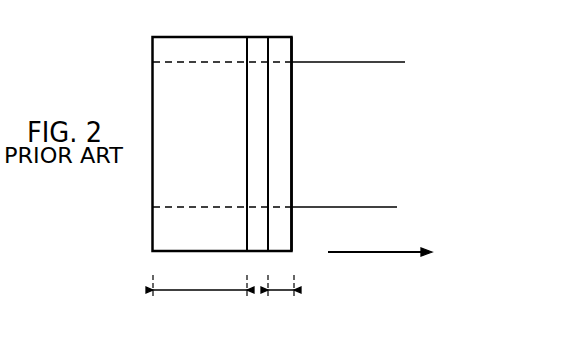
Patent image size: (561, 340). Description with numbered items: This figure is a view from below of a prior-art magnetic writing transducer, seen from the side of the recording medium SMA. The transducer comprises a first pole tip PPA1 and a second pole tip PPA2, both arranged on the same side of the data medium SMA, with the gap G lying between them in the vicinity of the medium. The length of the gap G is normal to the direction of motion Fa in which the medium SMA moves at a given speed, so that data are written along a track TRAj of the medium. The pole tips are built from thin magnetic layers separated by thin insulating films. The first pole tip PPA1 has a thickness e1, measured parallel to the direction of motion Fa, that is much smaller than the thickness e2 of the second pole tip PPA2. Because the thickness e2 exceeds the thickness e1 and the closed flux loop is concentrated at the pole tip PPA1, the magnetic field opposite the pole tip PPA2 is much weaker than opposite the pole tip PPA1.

The second pole tip PPA2 is at (222, 144).
The first pole tip PPA1 is at (284, 148).
The gap G is at (257, 50).
The track TRAj is at (394, 61).
The recording medium SMA is at (420, 148).
The direction of motion Fa is at (380, 268).
The thickness of the pole tip PPA2 e2 is at (200, 299).
The thickness of the pole tip PPA1 e1 is at (281, 299).